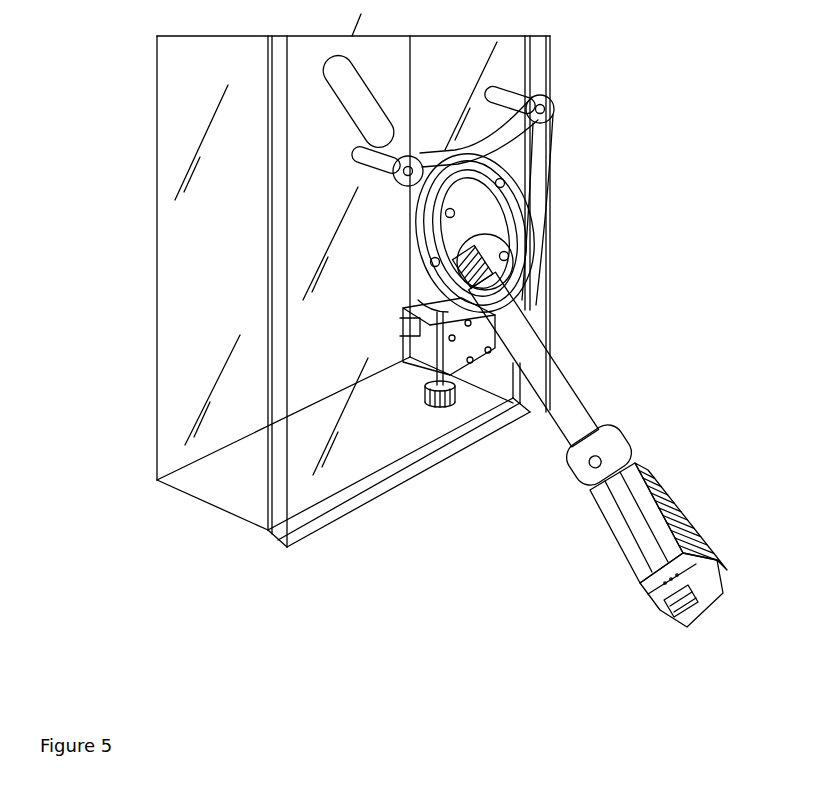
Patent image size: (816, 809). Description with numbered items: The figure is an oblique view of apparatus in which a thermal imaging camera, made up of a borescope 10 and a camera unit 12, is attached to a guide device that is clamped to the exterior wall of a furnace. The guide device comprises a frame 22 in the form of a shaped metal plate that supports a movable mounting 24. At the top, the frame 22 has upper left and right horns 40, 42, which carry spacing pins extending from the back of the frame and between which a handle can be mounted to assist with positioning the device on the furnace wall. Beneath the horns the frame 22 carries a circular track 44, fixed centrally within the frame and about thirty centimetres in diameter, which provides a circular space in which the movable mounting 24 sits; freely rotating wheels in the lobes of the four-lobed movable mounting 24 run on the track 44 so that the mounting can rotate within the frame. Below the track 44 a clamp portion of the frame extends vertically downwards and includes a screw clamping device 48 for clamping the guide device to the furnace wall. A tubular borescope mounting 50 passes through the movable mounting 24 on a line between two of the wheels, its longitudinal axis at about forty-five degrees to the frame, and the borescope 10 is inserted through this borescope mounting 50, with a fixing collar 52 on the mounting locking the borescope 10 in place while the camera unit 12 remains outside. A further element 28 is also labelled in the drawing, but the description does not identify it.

The borescope 10 is at (560, 385).
The camera unit 12 is at (597, 532).
The frame 22 is at (418, 252).
The movable mounting 24 is at (490, 232).
The clamp arm 28 is at (353, 168).
The horn 40 is at (436, 160).
The horn 42 is at (547, 116).
The circular track 44 is at (520, 205).
The screw clamping device 48 is at (428, 393).
The tubular borescope mounting 50 is at (418, 302).
The fixing collar 52 is at (405, 330).